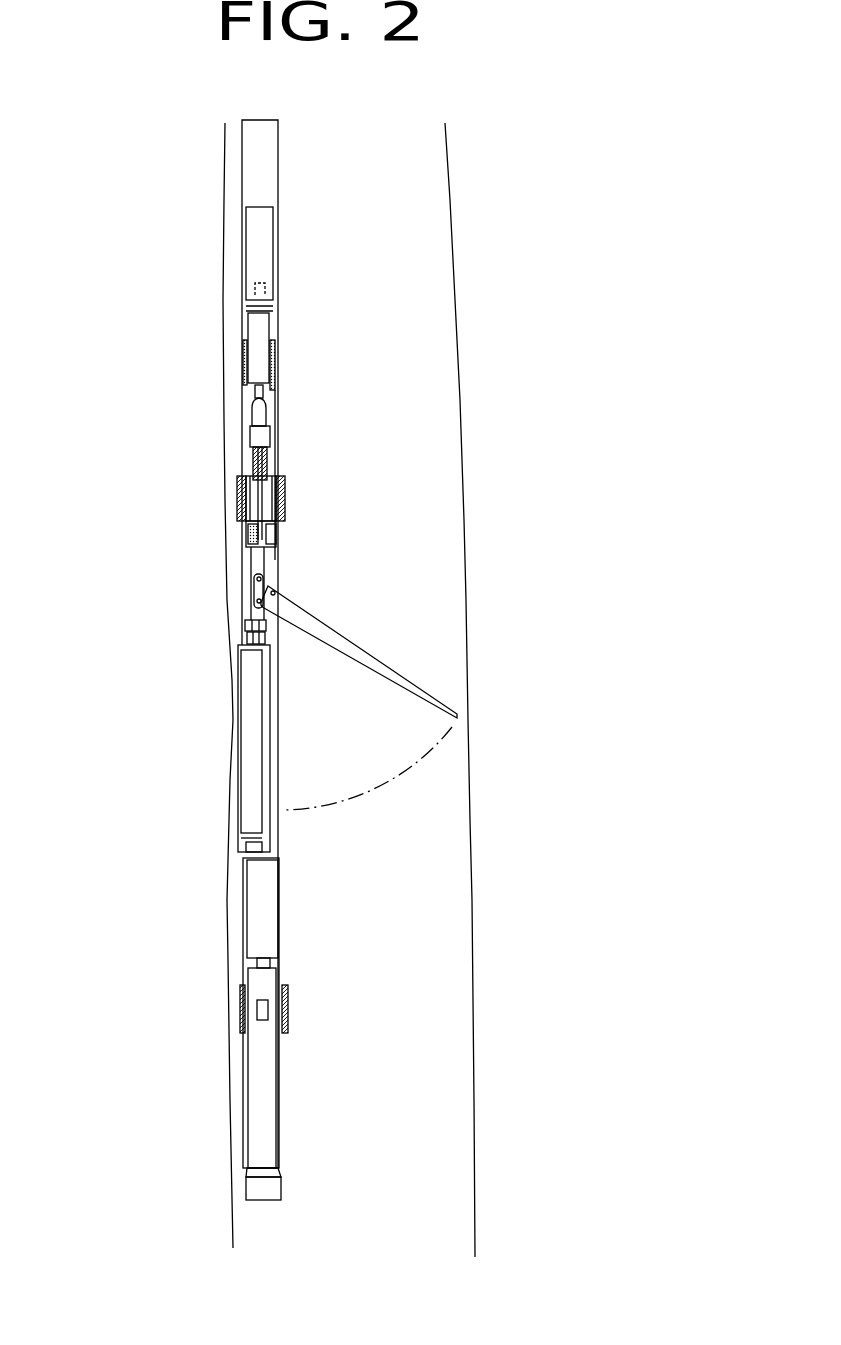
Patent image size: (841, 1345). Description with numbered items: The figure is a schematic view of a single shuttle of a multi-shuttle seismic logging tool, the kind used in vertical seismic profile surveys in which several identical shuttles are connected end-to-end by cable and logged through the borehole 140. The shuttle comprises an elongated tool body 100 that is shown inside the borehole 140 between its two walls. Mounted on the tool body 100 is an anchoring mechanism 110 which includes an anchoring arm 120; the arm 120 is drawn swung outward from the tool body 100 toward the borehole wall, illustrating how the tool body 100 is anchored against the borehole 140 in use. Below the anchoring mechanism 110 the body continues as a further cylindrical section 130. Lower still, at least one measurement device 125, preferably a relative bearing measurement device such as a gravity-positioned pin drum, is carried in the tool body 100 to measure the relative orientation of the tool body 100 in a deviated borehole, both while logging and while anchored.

The tool body 100 is at (297, 184).
The borehole 140 is at (318, 298).
The anchoring mechanism 110 is at (278, 461).
The anchoring arm 120 is at (395, 662).
The cylinder 130 is at (237, 731).
The measurement device 125 is at (258, 1010).